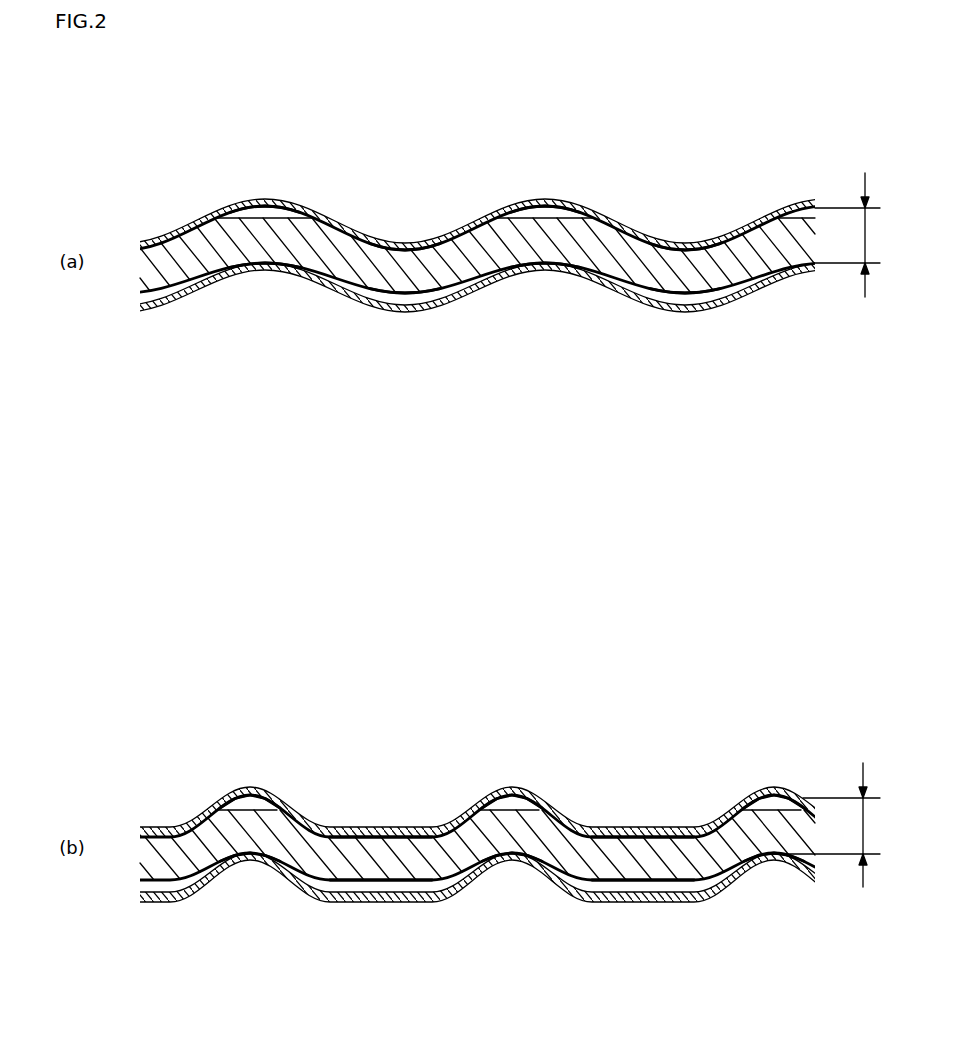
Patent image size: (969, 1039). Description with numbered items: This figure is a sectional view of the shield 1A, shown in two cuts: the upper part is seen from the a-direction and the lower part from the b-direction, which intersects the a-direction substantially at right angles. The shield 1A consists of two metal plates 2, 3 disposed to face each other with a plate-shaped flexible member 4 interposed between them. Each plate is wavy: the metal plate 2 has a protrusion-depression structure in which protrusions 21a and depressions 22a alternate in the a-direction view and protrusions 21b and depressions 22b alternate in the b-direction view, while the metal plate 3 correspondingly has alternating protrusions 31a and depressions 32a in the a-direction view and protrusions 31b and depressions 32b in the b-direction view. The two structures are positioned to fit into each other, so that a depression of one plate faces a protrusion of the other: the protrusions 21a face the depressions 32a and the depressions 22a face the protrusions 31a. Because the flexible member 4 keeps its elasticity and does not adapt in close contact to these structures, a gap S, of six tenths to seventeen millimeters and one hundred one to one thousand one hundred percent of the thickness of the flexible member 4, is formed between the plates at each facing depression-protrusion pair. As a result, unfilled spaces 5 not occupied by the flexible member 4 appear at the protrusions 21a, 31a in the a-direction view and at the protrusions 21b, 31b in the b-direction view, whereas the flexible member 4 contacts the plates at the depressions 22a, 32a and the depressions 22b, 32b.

The shield 1A is at (768, 128).
The metal plate 2 is at (683, 238).
The metal plate 3 is at (688, 295).
The flexible member 4 is at (752, 257).
The unfilled spaces 5 is at (243, 200).
The protrusions 21a is at (283, 211).
The depressions 22a is at (412, 240).
The protrusions 31a is at (432, 298).
The depressions 32a is at (276, 272).
The protrusions 21b is at (259, 803).
The depressions 22b is at (387, 826).
The protrusions 31b is at (397, 887).
The depressions 32b is at (250, 868).
The gap S is at (824, 530).